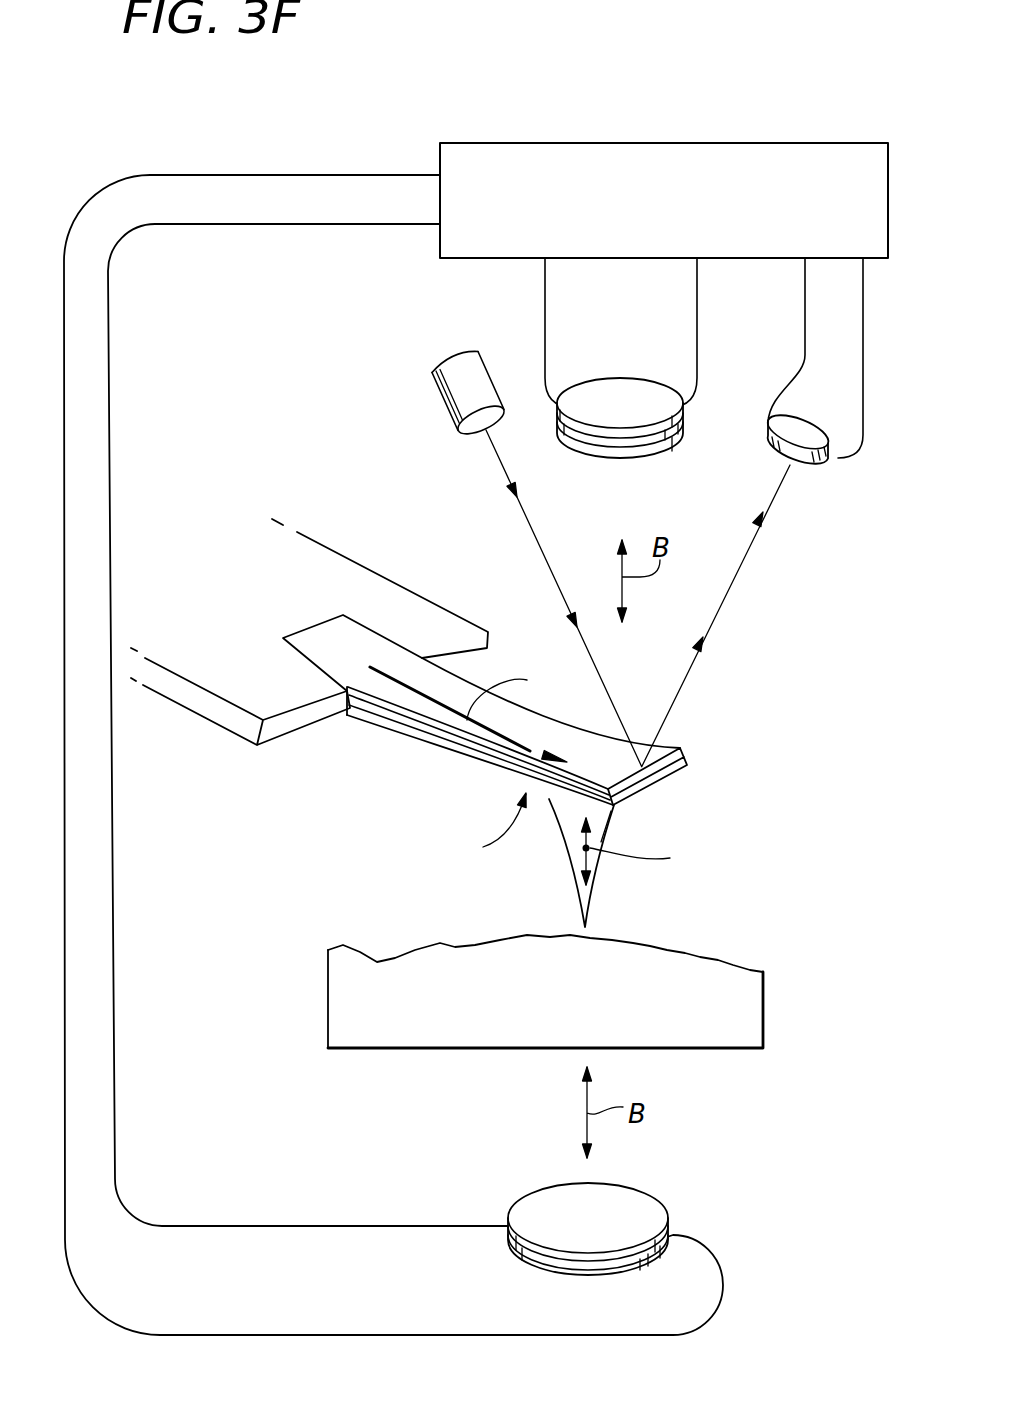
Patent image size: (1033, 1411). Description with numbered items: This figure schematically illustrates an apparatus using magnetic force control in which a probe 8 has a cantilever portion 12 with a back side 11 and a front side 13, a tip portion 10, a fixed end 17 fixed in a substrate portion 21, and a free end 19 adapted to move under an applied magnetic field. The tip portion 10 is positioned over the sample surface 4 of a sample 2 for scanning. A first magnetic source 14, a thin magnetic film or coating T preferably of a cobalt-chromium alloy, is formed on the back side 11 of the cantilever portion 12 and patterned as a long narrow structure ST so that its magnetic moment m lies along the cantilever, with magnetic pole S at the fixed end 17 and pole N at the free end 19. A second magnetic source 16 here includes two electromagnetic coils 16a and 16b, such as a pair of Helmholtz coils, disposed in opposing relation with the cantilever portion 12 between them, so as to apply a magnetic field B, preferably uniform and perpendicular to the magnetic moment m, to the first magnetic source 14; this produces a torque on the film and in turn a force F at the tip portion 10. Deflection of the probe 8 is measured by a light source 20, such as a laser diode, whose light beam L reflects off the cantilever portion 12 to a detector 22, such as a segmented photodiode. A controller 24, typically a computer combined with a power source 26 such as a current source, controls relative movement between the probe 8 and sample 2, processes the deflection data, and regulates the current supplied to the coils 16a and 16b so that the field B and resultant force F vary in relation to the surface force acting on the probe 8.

The sample 2 is at (581, 963).
The sample surface 4 is at (657, 947).
The probe 8 is at (297, 506).
The tip portion 10 is at (611, 832).
The back side 11 is at (383, 723).
The cantilever portion 12 is at (418, 758).
The front side 13 is at (458, 777).
The first magnetic source 14 is at (724, 744).
The second magnetic source 16 is at (588, 766).
The electromagnetic coil 16a is at (590, 376).
The electromagnetic coil 16b is at (663, 1200).
The fixed end 17 is at (345, 615).
The free end 19 is at (680, 747).
The light source 20 is at (445, 370).
The substrate portion 21 is at (243, 669).
The detector 22 is at (806, 421).
The controller 24 is at (664, 166).
The power source 26 is at (677, 143).